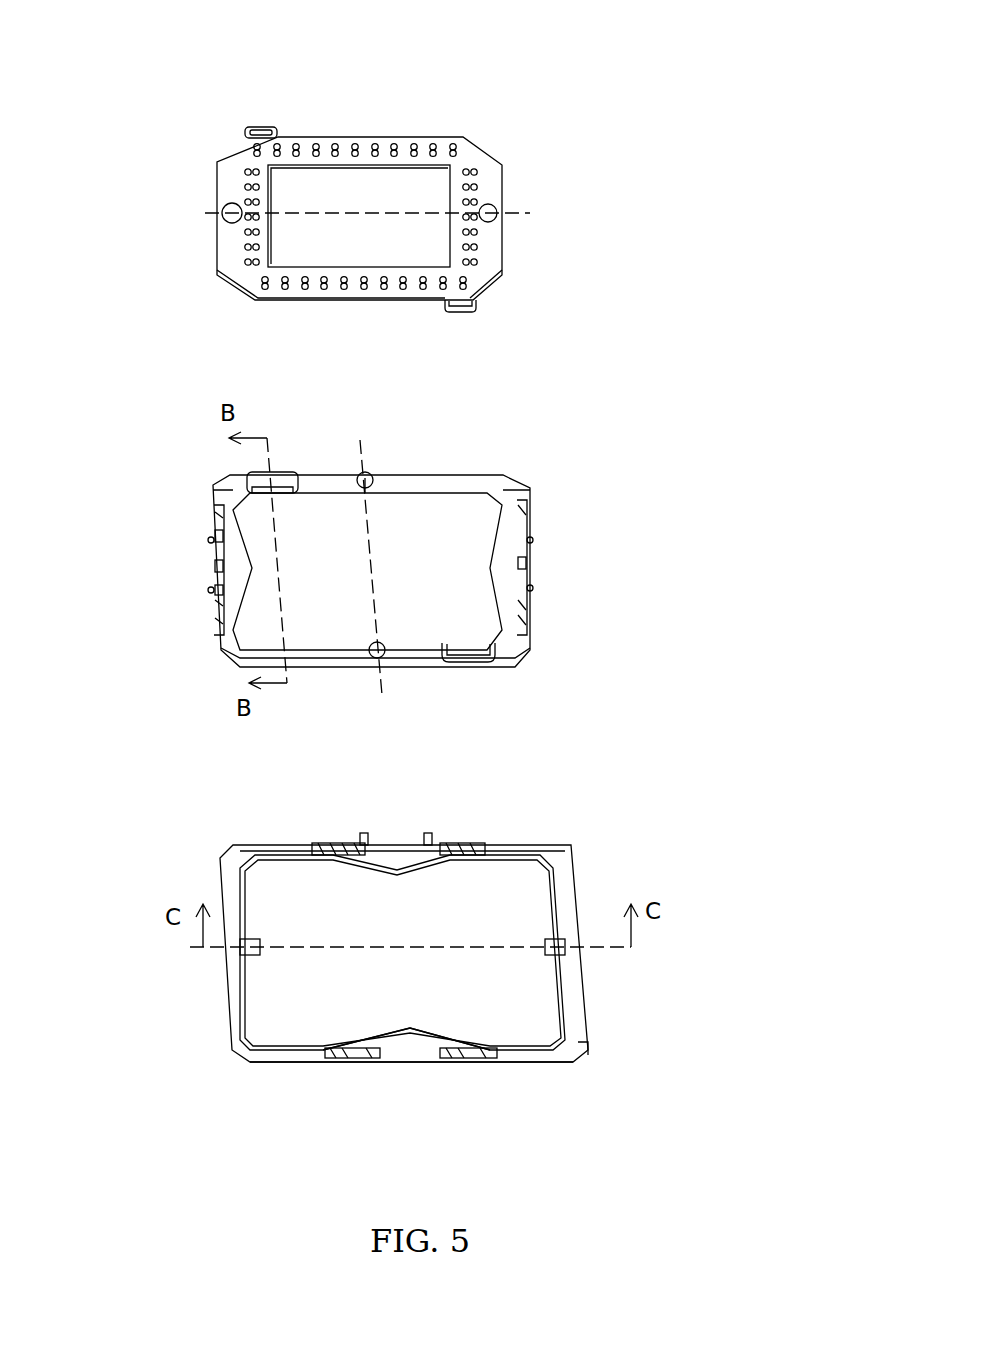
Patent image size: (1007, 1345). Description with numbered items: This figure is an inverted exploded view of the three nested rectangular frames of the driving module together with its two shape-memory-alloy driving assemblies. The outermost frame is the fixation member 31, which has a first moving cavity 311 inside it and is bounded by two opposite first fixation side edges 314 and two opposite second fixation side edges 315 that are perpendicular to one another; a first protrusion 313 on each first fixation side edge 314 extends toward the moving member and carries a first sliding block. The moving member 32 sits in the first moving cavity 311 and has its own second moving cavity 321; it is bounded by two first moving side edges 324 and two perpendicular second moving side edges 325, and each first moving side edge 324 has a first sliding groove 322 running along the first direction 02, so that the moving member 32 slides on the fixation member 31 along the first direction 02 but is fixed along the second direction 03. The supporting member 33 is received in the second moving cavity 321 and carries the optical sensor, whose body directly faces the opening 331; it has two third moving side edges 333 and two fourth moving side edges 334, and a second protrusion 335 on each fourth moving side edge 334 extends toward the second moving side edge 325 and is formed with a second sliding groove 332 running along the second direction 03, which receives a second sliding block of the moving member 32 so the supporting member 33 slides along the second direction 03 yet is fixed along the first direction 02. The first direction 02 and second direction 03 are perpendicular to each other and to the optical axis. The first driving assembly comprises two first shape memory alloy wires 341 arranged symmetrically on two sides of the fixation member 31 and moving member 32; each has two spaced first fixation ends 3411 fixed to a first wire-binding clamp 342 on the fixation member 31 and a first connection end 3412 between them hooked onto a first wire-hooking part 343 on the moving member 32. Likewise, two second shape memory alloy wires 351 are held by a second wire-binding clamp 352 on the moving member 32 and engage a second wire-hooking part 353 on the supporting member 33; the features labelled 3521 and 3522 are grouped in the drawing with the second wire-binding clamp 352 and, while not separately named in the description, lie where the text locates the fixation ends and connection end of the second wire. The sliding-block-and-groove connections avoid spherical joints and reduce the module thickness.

The fixation member 31 is at (650, 820).
The first moving cavity 311 is at (292, 897).
The first protrusion 313 is at (560, 945).
The first fixation side edge 314 is at (232, 968).
The second fixation side edge 315 is at (510, 845).
The moving member 32 is at (660, 477).
The second moving cavity 321 is at (427, 525).
The first sliding groove 322 is at (215, 575).
The first moving side edge 324 is at (517, 487).
The second moving side edge 325 is at (317, 655).
The supporting member 33 is at (645, 212).
The opening 331 is at (410, 190).
The second sliding groove 332 is at (257, 128).
The third moving side edge 333 is at (484, 187).
The fourth moving side edge 334 is at (363, 146).
The second protrusion 335 is at (268, 128).
The first shape memory alloy wire 341 is at (510, 1148).
The first fixation end 3411 is at (345, 1058).
The first connection end 3412 is at (403, 1045).
The first wire-binding clamp 342 is at (332, 1060).
The first wire-hooking part 343 is at (364, 471).
The second shape memory alloy wire 351 is at (215, 520).
The second wire-binding clamp 352 is at (677, 498).
The hook 3521 is at (522, 510).
The slot 3522 is at (525, 563).
The second wire-hooking part 353 is at (228, 205).
The first direction 02 is at (380, 584).
The second direction 03 is at (391, 214).